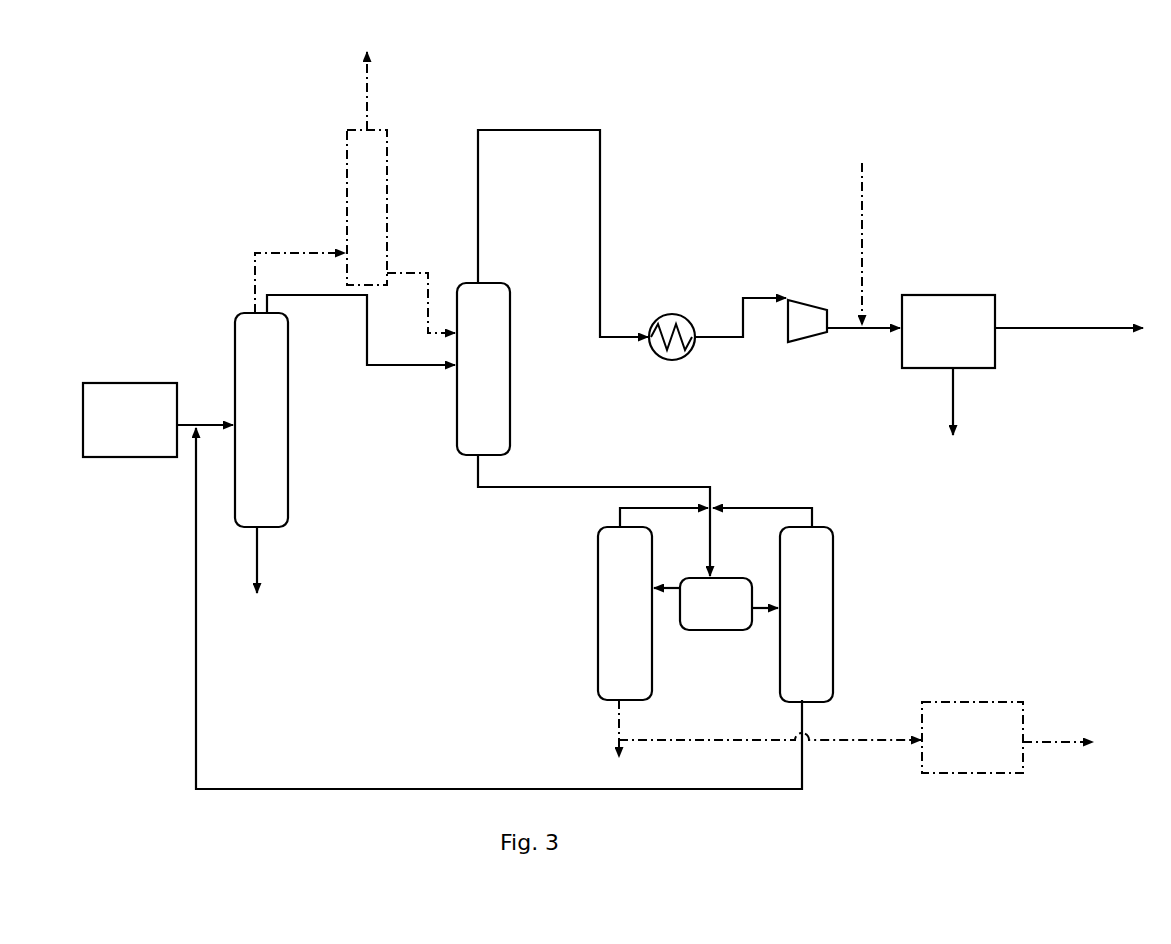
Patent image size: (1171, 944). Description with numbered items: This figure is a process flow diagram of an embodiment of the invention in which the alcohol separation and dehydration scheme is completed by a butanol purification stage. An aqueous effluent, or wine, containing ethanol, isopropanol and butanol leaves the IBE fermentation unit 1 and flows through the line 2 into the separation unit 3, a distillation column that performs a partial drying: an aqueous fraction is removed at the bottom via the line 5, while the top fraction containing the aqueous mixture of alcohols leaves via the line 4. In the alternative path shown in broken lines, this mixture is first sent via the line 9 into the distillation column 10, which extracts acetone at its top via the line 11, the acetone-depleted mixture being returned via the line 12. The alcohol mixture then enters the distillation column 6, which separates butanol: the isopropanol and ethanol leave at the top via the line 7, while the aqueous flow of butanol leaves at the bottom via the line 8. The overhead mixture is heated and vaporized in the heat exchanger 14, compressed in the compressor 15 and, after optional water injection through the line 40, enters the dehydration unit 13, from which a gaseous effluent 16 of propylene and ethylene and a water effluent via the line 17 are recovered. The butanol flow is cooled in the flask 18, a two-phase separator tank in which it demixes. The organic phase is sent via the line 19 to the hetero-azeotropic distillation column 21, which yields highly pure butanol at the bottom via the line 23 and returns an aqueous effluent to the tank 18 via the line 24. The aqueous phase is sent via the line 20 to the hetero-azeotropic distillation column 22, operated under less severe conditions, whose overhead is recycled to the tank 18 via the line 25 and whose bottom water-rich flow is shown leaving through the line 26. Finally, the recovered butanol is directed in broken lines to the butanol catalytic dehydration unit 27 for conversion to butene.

The IBE fermentation unit 1 is at (122, 457).
The line 2 is at (203, 418).
The separation unit 3 is at (288, 453).
The line 4 is at (337, 300).
The line 5 is at (257, 563).
The distillation column 6 is at (510, 385).
The line 7 is at (550, 133).
The line 8 is at (577, 487).
The line 9 is at (272, 253).
The distillation column 10 is at (385, 137).
The line 11 is at (367, 110).
The line 12 is at (430, 283).
The dehydration unit 13 is at (957, 295).
The heat exchanger 14 is at (682, 355).
The compressor 15 is at (813, 305).
The gaseous effluent 16 is at (1060, 328).
The line 17 is at (955, 397).
The flask 18 is at (732, 618).
The line 19 is at (660, 592).
The line 20 is at (772, 603).
The hetero-azeotropic distillation column 21 is at (608, 672).
The hetero-azeotropic distillation column 22 is at (822, 638).
The line 23 is at (618, 730).
The line 24 is at (618, 508).
The line 25 is at (793, 507).
The recycle line 26 is at (397, 790).
The butanol catalytic dehydration unit 27 is at (972, 773).
The line 40 is at (863, 213).